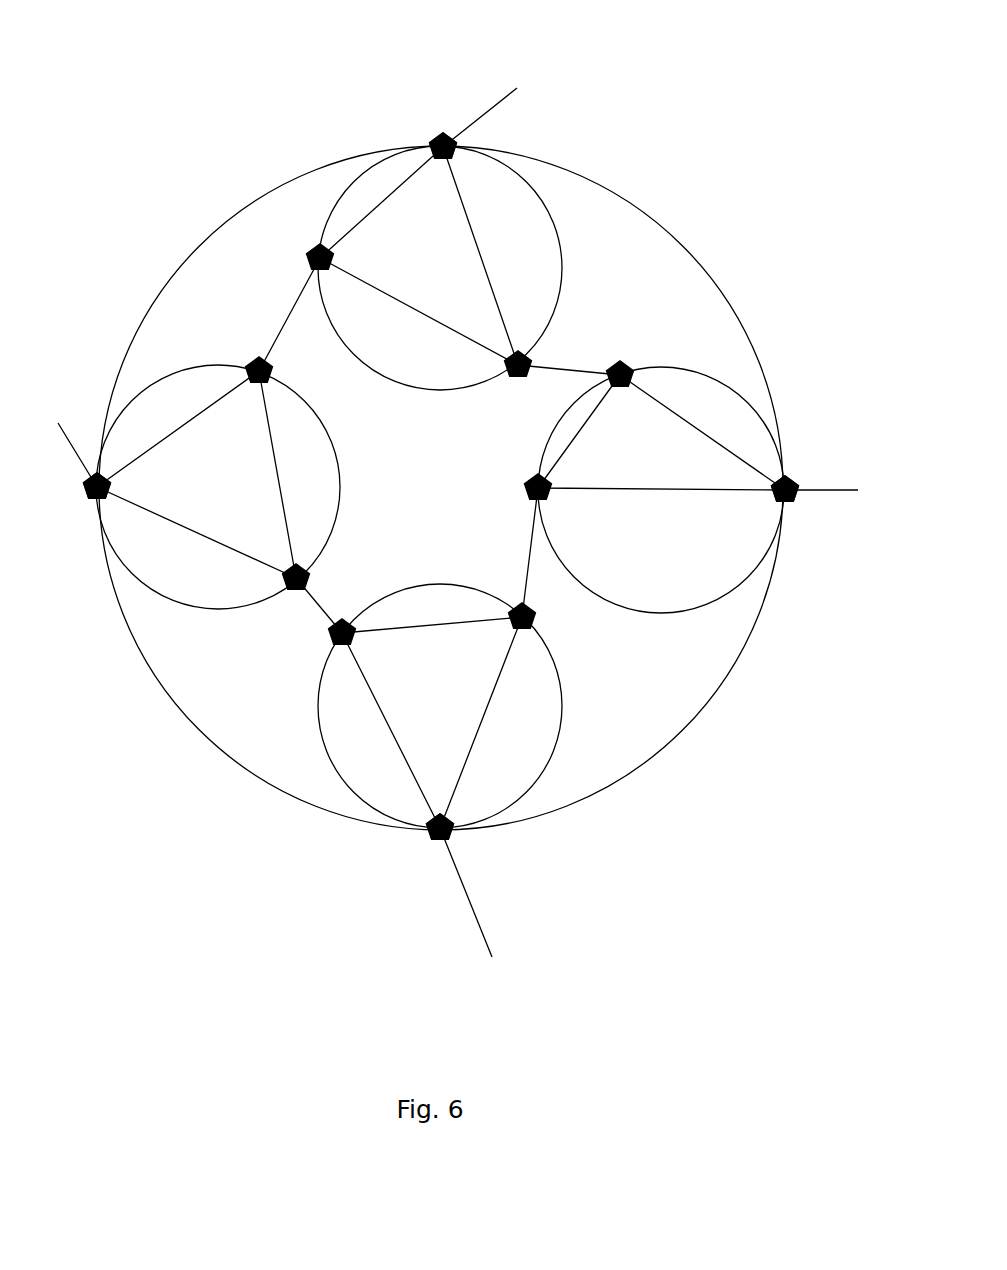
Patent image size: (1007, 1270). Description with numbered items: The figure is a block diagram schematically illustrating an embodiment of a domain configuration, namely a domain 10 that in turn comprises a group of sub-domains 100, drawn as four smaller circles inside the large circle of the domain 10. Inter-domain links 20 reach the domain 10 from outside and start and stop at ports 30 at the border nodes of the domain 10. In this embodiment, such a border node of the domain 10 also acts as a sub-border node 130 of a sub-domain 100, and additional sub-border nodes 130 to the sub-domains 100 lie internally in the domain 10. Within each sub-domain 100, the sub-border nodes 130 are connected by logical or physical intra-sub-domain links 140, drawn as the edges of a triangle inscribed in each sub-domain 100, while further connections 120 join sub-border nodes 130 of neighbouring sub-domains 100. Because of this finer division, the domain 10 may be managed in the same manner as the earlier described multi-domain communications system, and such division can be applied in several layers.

The domain 10 is at (686, 249).
The inter-domain link 20 is at (492, 108).
The port 30 is at (455, 160).
The sub-domain 100 is at (237, 610).
The connecting line 120 is at (292, 302).
The sub-border node 130 is at (433, 140).
The intra-sub-domain link 140 is at (388, 200).